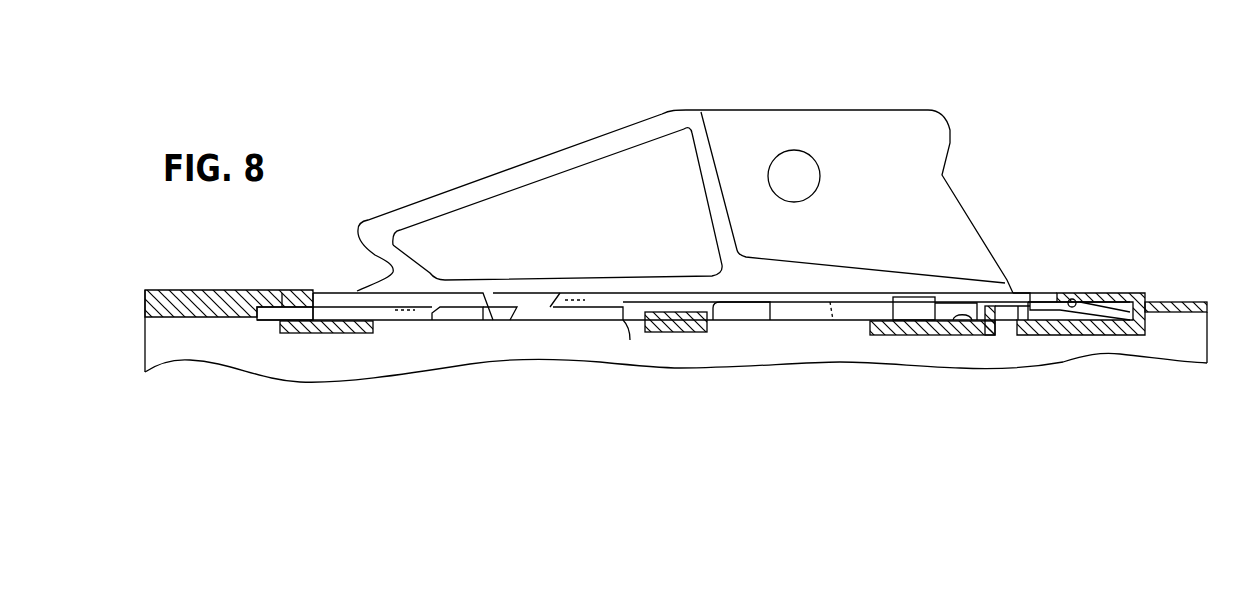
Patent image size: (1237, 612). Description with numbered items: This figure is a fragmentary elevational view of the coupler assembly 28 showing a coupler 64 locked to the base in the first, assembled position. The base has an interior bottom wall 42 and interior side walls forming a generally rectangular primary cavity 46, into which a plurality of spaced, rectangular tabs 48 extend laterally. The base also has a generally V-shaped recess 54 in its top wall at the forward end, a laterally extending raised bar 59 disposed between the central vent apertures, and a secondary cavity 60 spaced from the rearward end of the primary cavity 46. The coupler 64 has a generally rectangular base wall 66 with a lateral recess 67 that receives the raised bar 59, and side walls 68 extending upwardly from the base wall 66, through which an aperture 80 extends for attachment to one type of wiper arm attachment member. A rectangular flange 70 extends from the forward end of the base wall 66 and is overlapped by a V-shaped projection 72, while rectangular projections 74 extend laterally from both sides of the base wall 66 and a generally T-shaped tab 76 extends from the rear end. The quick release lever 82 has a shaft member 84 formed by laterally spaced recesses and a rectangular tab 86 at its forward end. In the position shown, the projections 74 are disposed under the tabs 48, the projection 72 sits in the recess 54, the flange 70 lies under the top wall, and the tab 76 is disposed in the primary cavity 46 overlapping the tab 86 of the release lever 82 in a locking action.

The coupler assembly 28 is at (1030, 172).
The interior bottom wall 42 is at (323, 333).
The primary cavity 46 is at (960, 323).
The tabs 48 is at (405, 310).
The recess 54 is at (296, 300).
The raised bar 59 is at (682, 334).
The secondary cavity 60 is at (1098, 336).
The coupler 64 is at (508, 165).
The base wall 66 is at (512, 310).
The recess 67 is at (626, 322).
The side walls 68 is at (601, 200).
The flange 70 is at (275, 298).
The projection 72 is at (302, 300).
The projections 74 is at (459, 322).
The tab 76 is at (1036, 297).
The aperture 80 is at (797, 170).
The quick release lever 82 is at (1118, 302).
The shaft member 84 is at (1075, 302).
The tab 86 is at (1045, 300).